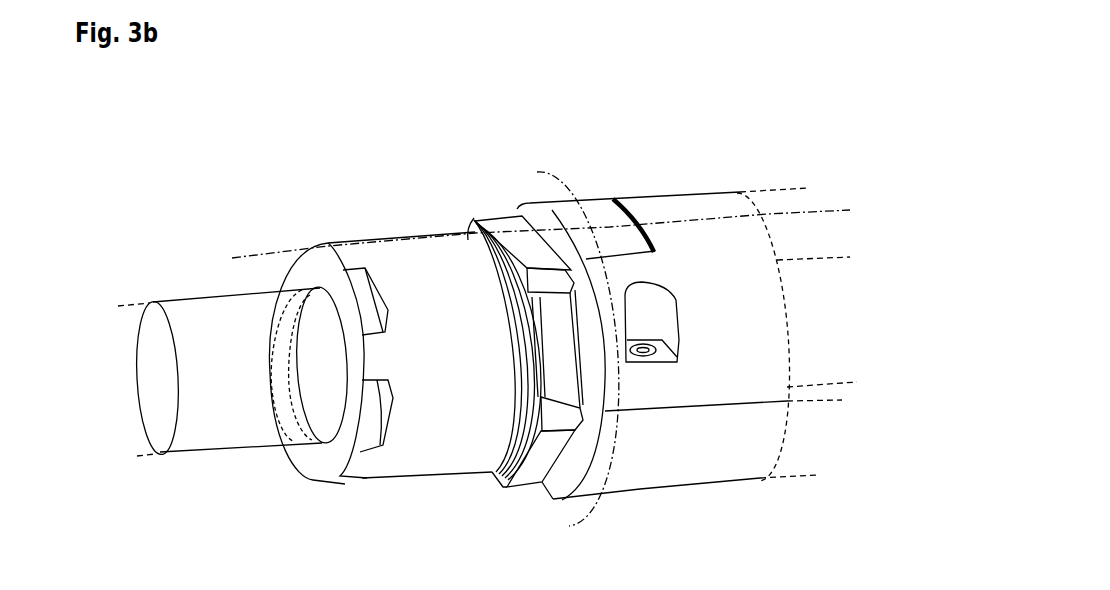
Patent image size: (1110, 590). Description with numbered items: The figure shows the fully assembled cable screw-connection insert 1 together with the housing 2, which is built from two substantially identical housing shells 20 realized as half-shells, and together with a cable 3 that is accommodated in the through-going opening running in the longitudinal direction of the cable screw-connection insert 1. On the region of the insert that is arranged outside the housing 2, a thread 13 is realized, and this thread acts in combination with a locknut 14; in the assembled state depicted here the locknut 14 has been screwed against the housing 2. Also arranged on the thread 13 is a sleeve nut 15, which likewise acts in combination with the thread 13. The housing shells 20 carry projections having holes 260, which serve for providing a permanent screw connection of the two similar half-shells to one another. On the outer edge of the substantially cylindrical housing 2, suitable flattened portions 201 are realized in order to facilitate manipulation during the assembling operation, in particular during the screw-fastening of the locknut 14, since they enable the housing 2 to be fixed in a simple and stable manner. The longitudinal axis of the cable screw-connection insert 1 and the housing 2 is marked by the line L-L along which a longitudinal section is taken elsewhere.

The cable screw-connection insert 1 is at (331, 116).
The housing 2 is at (618, 94).
The cable 3 is at (178, 307).
The thread 13 is at (470, 215).
The locknut 14 is at (510, 217).
The sleeve nut 15 is at (350, 238).
The housing shell 20 is at (657, 215).
The flattened portion 201 is at (597, 207).
The hole 260 is at (642, 340).